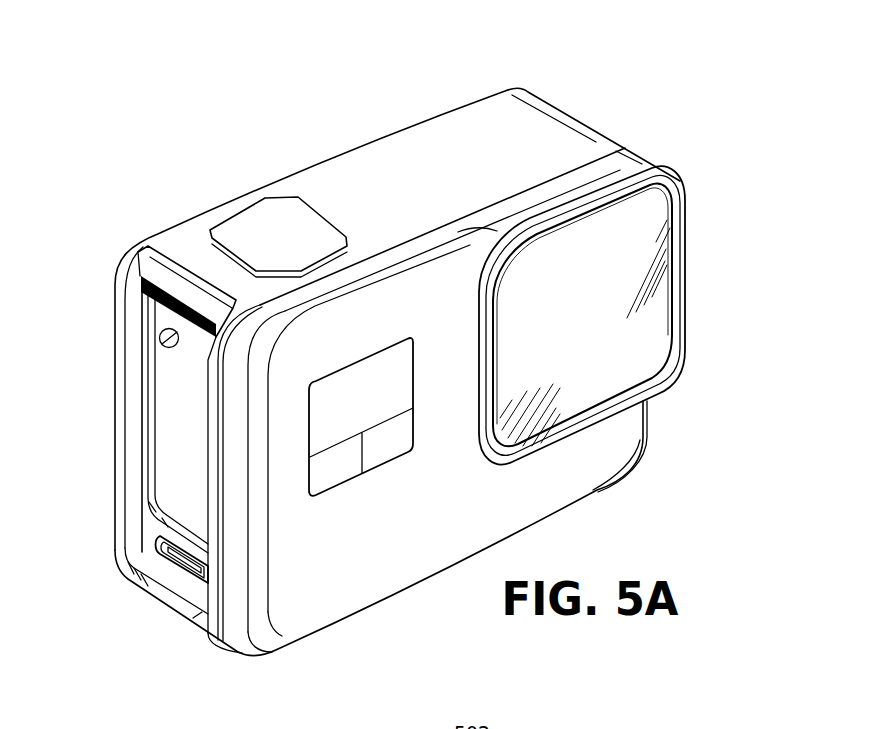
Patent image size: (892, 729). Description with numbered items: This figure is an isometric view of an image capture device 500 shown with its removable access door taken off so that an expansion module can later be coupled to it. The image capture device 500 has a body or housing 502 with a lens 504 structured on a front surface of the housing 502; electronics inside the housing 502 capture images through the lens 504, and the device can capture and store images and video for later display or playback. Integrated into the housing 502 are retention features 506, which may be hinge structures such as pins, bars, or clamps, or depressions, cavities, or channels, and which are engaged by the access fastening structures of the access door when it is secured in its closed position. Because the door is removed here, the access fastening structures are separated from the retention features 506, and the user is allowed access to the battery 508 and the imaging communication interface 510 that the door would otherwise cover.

The image capture device 500 is at (671, 59).
The housing 502 is at (403, 139).
The lens 504 is at (637, 277).
The retention features 506 is at (147, 280).
The battery 508 is at (168, 423).
The imaging communication interface 510 is at (158, 554).